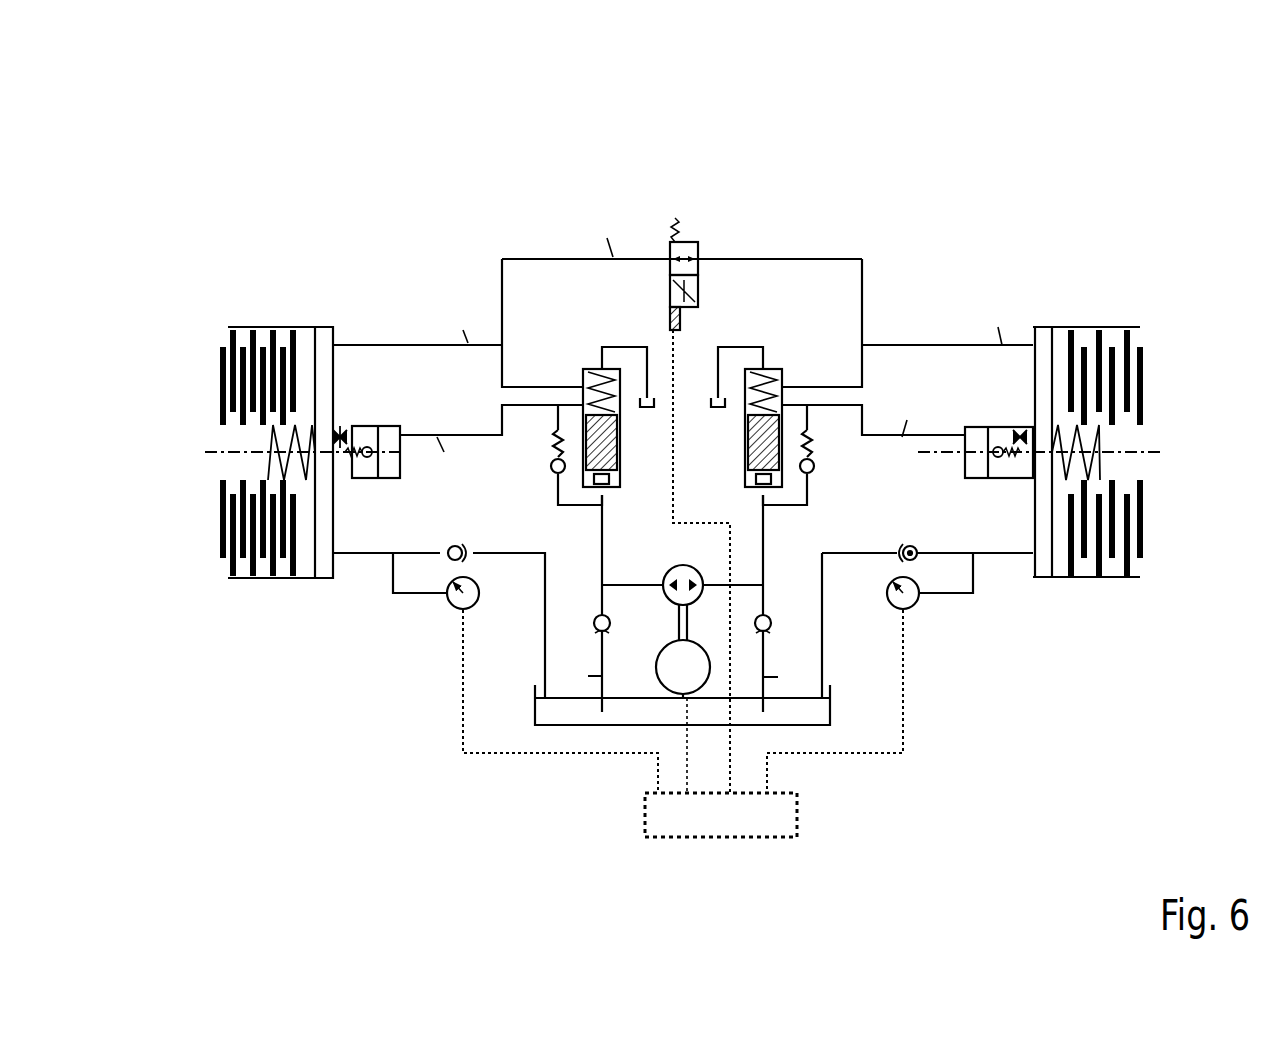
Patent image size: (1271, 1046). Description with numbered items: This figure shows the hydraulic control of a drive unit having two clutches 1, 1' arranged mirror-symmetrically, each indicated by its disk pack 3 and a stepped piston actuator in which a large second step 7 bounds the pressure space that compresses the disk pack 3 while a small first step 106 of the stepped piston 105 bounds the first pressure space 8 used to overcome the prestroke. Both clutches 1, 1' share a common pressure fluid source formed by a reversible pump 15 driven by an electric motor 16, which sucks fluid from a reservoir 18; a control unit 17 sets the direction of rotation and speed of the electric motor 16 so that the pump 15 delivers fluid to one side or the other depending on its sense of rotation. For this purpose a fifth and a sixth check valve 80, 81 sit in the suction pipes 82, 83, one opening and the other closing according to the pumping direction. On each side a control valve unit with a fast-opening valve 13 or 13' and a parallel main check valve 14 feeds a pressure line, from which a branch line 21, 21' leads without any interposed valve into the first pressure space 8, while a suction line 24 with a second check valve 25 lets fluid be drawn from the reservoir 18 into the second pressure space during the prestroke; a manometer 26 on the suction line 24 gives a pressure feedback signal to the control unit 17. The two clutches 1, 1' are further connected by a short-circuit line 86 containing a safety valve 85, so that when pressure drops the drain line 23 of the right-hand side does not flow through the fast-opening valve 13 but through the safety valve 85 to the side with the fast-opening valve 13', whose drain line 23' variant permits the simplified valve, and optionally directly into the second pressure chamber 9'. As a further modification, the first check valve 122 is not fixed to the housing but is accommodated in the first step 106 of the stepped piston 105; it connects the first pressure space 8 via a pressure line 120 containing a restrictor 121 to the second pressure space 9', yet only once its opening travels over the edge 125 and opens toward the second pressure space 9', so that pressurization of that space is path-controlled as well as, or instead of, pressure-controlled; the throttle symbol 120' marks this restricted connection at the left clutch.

The clutch 1 is at (1092, 391).
The clutch 1' is at (307, 365).
The disk pack 3 is at (1120, 540).
The second step 7 is at (327, 333).
The first pressure space 8 is at (372, 468).
The second pressure space 9' is at (297, 347).
The fast-opening valve 13 is at (813, 301).
The fast-opening valve 13' is at (831, 275).
The main check valve 14 is at (810, 460).
The reversible pump 15 is at (683, 593).
The electric motor 16 is at (683, 683).
The control unit 17 is at (693, 817).
The reservoir 18 is at (703, 708).
The branch line 21 is at (982, 276).
The branch line 21' is at (414, 668).
The drain line 23 is at (996, 230).
The drain line 23' is at (662, 251).
The suction line 24 is at (853, 556).
The second check valve 25 is at (915, 556).
The manometer 26 is at (915, 600).
The fifth check valve 80 is at (602, 676).
The sixth check valve 81 is at (765, 678).
The suction pipe 82 is at (602, 631).
The suction pipe 83 is at (763, 630).
The safety valve 85 is at (620, 358).
The short-circuit line 86 is at (613, 257).
The stepped piston 105 is at (323, 432).
The first step 106 is at (228, 553).
The pressure line 120 is at (481, 297).
The throttle valve 120' is at (228, 375).
The restrictor 121 is at (355, 443).
The first check valve 122 is at (385, 457).
The edge 125 is at (348, 427).